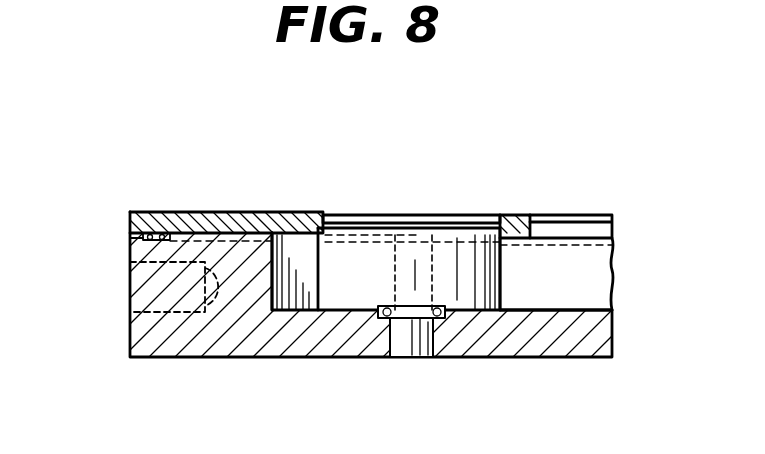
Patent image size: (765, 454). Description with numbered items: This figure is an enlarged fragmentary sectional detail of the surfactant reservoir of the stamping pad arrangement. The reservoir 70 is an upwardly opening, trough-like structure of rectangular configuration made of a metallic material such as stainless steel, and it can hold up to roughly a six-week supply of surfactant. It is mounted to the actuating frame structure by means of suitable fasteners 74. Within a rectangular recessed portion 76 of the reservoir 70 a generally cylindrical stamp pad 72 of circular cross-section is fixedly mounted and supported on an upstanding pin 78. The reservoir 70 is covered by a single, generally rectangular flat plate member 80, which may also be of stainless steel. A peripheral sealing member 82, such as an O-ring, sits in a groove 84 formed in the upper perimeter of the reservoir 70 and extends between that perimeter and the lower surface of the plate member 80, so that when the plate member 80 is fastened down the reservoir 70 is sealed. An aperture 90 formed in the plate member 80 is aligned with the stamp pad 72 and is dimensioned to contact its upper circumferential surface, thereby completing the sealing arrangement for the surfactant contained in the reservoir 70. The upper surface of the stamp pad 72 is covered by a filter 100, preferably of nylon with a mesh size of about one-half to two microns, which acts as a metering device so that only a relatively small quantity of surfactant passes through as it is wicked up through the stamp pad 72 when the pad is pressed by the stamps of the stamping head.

The reservoir 70 is at (205, 357).
The stamp pad 72 is at (508, 263).
The fastener 74 is at (130, 293).
The rectangular recessed portion 76 is at (285, 237).
The upstanding pin 78 is at (395, 258).
The plate member 80 is at (195, 212).
The sealing member 82 is at (153, 235).
The groove 84 is at (131, 240).
The aperture 90 is at (320, 213).
The filter 100 is at (438, 213).